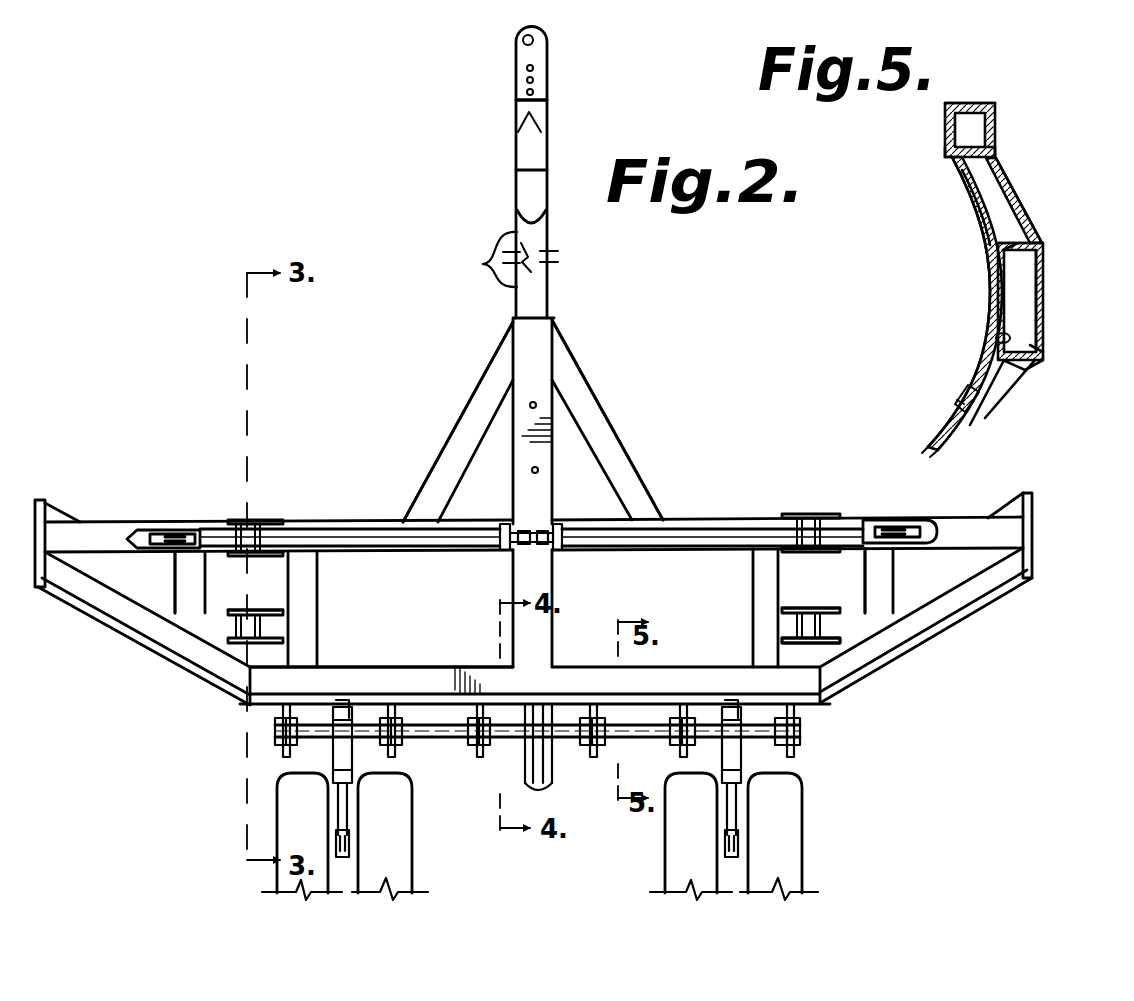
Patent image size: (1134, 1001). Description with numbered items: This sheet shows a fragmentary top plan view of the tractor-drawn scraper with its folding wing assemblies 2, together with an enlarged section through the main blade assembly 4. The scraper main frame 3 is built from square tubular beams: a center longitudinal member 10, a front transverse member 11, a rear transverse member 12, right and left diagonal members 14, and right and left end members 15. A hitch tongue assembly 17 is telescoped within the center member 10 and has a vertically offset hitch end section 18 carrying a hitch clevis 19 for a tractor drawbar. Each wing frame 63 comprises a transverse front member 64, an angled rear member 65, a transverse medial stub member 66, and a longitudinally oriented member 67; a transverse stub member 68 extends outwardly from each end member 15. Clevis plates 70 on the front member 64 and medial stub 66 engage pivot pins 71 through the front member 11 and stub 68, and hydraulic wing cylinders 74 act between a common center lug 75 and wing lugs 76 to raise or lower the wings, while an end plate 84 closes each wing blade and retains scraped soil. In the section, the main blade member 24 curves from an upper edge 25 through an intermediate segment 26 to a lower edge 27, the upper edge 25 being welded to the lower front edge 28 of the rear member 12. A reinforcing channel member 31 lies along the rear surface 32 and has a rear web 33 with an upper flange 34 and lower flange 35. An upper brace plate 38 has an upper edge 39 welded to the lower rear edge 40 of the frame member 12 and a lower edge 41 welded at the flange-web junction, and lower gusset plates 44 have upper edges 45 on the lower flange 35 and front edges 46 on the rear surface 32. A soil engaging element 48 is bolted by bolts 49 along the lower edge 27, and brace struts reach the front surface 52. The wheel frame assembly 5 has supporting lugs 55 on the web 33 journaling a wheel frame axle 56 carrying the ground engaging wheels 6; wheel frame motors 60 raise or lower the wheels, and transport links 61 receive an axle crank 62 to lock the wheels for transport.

In FIG. 2, the folding wing assemblies 2 is at (108, 634).
In FIG. 2, the scraper main frame 3 is at (418, 662).
In FIG. 5, the scraper main frame 3 is at (968, 100).
In FIG. 5, the main blade assembly 4 is at (985, 270).
In FIG. 2, the wheel frame assembly 5 is at (272, 735).
In FIG. 2, the ground engaging wheels 6 is at (277, 800).
In FIG. 2, the center longitudinal member 10 is at (543, 340).
In FIG. 2, the front transverse member 11 is at (305, 521).
In FIG. 2, the rear transverse member 12 is at (560, 666).
In FIG. 5, the rear transverse member 12 is at (996, 120).
In FIG. 2, the diagonal members 14 is at (459, 426).
In FIG. 2, the end members 15 is at (319, 572).
In FIG. 2, the hitch tongue assembly 17 is at (483, 264).
In FIG. 2, the hitch end section 18 is at (548, 106).
In FIG. 2, the hitch clevis 19 is at (521, 47).
In FIG. 5, the main blade member 24 is at (988, 290).
In FIG. 5, the upper edge 25 is at (952, 162).
In FIG. 5, the intermediate segment 26 is at (988, 316).
In FIG. 5, the lower edge 27 is at (975, 420).
In FIG. 5, the lower front edge 28 is at (948, 152).
In FIG. 5, the reinforcing channel member 31 is at (1044, 273).
In FIG. 5, the rear surface 32 is at (996, 340).
In FIG. 5, the rear web 33 is at (1044, 306).
In FIG. 5, the upper flange 34 is at (1020, 232).
In FIG. 5, the lower flange 35 is at (1030, 366).
In FIG. 5, the upper brace plate 38 is at (1018, 200).
In FIG. 5, the upper edge 39 is at (1008, 178).
In FIG. 5, the lower rear edge 40 is at (996, 148).
In FIG. 5, the lower edge 41 is at (1040, 246).
In FIG. 5, the lower gusset plates 44 is at (1000, 392).
In FIG. 5, the upper edges 45 is at (1038, 348).
In FIG. 5, the front edges 46 is at (972, 392).
In FIG. 5, the soil engaging element 48 is at (927, 446).
In FIG. 5, the bolts 49 is at (960, 402).
In FIG. 5, the front surface 52 is at (968, 190).
In FIG. 2, the wheel frame supporting lugs 55 is at (480, 758).
In FIG. 2, the wheel frame axle 56 is at (410, 746).
In FIG. 2, the wheel frame motors 60 is at (333, 753).
In FIG. 2, the transport links 61 is at (525, 783).
In FIG. 2, the axle crank 62 is at (545, 792).
In FIG. 2, the wing frame 63 is at (82, 520).
In FIG. 2, the transverse front member 64 is at (98, 531).
In FIG. 2, the angled rear member 65 is at (80, 596).
In FIG. 2, the transverse medial stub member 66 is at (170, 641).
In FIG. 2, the longitudinally oriented member 67 is at (178, 580).
In FIG. 2, the transverse stub member 68 is at (806, 614).
In FIG. 2, the clevis plates 70 is at (240, 517).
In FIG. 2, the pivot pins 71 is at (270, 516).
In FIG. 2, the hydraulic wing cylinders 74 is at (397, 526).
In FIG. 2, the center lug 75 is at (548, 530).
In FIG. 2, the wing lugs 76 is at (165, 531).
In FIG. 2, the end plate 84 is at (48, 506).